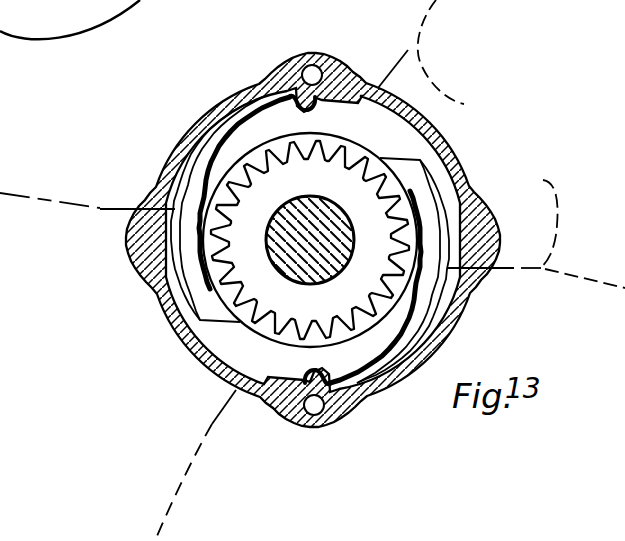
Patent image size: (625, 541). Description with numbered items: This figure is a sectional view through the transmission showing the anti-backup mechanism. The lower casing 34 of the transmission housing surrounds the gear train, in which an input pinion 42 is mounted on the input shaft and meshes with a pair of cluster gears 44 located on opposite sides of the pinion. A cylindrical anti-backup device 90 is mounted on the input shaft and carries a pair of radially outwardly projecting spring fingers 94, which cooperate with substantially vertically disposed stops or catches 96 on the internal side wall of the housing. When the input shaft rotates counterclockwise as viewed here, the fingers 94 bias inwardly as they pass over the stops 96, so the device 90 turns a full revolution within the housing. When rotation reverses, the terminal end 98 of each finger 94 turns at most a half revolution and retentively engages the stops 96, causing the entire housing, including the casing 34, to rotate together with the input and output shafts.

The lower casing 34 is at (443, 148).
The input pinion 42 is at (410, 131).
The cluster gears 44 is at (464, 104).
The anti-backup device 90 is at (460, 164).
The spring fingers 94 is at (242, 117).
The stops or catches 96 is at (292, 76).
The terminal end 98 is at (326, 62).